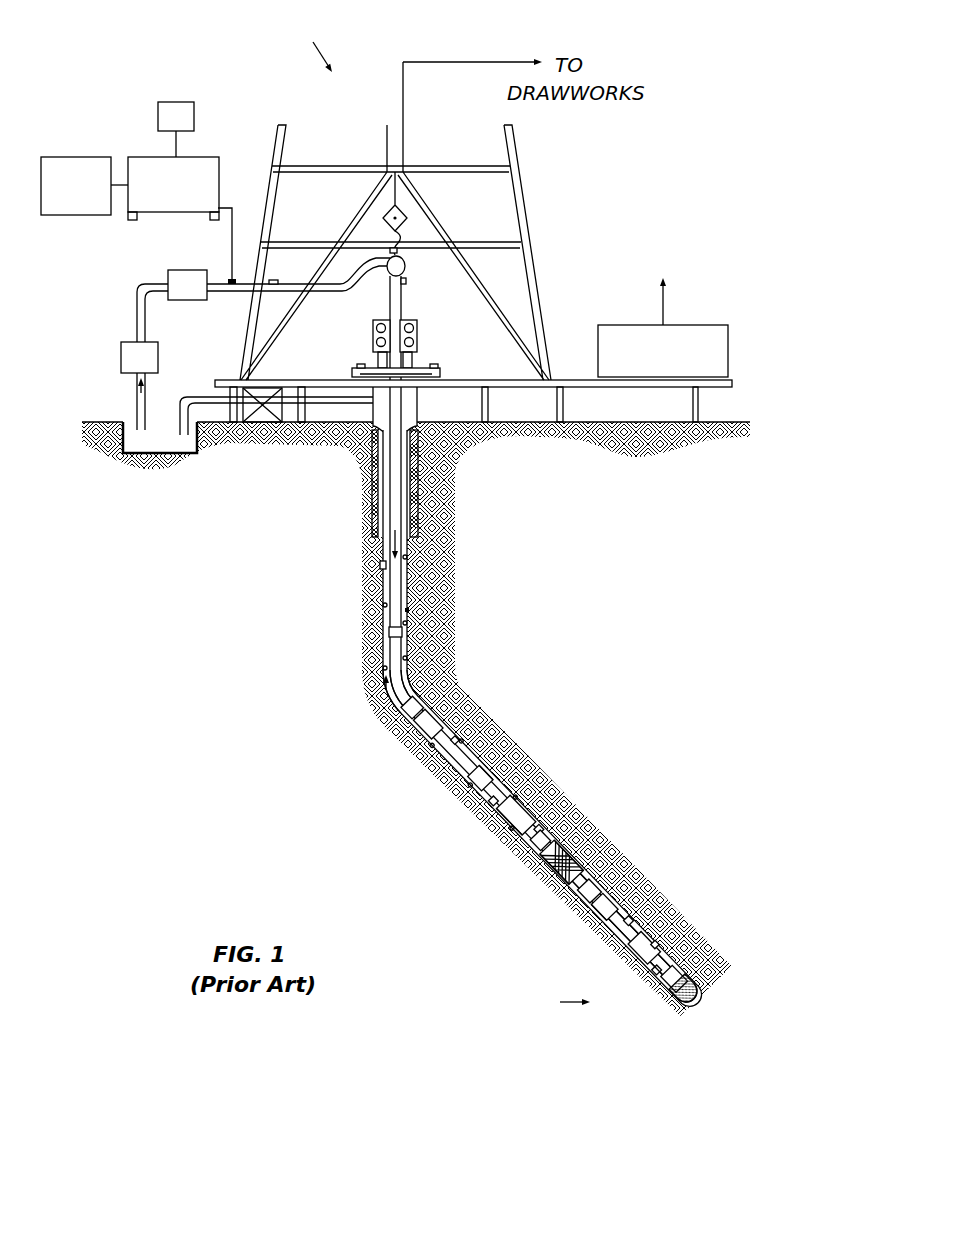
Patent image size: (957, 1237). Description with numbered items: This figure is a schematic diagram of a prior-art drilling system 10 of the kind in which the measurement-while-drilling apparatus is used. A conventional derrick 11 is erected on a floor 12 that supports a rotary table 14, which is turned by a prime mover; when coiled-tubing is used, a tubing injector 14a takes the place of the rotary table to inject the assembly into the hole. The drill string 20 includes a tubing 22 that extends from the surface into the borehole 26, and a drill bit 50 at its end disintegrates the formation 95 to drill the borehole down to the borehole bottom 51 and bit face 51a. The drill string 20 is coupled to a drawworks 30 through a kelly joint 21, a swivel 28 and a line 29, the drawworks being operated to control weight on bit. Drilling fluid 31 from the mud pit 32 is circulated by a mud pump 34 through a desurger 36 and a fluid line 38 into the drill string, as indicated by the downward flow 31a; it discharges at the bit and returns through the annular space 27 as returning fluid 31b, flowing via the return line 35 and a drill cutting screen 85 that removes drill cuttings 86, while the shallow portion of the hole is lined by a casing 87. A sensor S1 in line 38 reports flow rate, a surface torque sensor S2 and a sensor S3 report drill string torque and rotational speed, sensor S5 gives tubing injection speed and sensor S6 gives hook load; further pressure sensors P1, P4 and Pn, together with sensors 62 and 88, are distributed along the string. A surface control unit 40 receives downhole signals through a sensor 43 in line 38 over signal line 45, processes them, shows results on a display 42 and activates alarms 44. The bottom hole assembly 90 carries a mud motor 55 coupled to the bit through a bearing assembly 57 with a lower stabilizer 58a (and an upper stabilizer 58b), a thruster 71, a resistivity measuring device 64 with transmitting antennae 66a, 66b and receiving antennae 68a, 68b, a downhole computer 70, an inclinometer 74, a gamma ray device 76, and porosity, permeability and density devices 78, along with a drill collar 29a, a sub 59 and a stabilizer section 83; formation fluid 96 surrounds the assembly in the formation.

The drilling system 10 is at (311, 51).
The derrick 11 is at (532, 253).
The floor 12 is at (562, 380).
The rotary table 14 is at (417, 367).
The tubing injector 14a is at (417, 337).
The drill string 20 is at (410, 612).
The kelly joint 21 is at (402, 307).
The tubing (drill pipe or coiled-tubing) 22 is at (390, 597).
The borehole 26 is at (412, 683).
The annular space 27 is at (425, 712).
The swivel 28 is at (391, 275).
The line 29 is at (403, 145).
The drill collar 29a is at (550, 807).
The drawworks 30 is at (710, 325).
The drilling fluid 31 is at (123, 452).
The mud flow into drill string 31a is at (393, 548).
The returning drilling fluid 31b is at (383, 685).
The mud pit 32 is at (178, 452).
The mud pump 34 is at (137, 350).
The return line 35 is at (310, 404).
The desurger 36 is at (168, 270).
The fluid line 38 is at (233, 290).
The surface control unit 40 is at (146, 155).
The display/monitor 42 is at (179, 102).
The sensor 43 is at (232, 278).
The alarms 44 is at (95, 217).
The signal line 45 is at (227, 200).
The drill bit 50 is at (703, 972).
The borehole bottom 51 is at (680, 1010).
The bit face 51a is at (697, 987).
The downhole motor (mud motor) 55 is at (463, 752).
The bearing assembly 57 is at (668, 937).
The lower stabilizer 58a is at (684, 934).
The sensor 58b is at (500, 820).
The mud motor 59 is at (663, 955).
The sensor 62 is at (503, 797).
The resistivity measuring device 64 is at (600, 885).
The transmitting antenna 66a is at (527, 833).
The transmitting antenna 66b is at (597, 903).
The receiving antenna 68a is at (577, 867).
The receiving antenna 68b is at (580, 843).
The downhole computer 70 is at (410, 725).
The thruster 71 is at (617, 930).
The inclinometer 74 is at (610, 877).
The gamma ray device 76 is at (620, 900).
The formation porosity, permeability and density measuring devices 78 is at (403, 713).
The stabilizer section 83 is at (528, 857).
The drill cutting screen 85 is at (257, 382).
The drill cuttings 86 is at (405, 660).
The surface casing 87 is at (418, 510).
The sensor 88 is at (637, 918).
The bottom hole assembly (drilling assembly) 90 is at (590, 758).
The formation 95 is at (434, 719).
The formation fluid 96 is at (537, 1005).
The flow rate sensor S1 is at (273, 280).
The surface torque sensor S2 is at (437, 364).
The rotational speed sensor S3 is at (360, 364).
The tubing injection speed sensor S5 is at (406, 280).
The hook load sensor S6 is at (390, 248).
The pressure sensor P1 is at (691, 943).
The pressure sensor P4 is at (462, 740).
The pressure sensor Pn is at (380, 565).